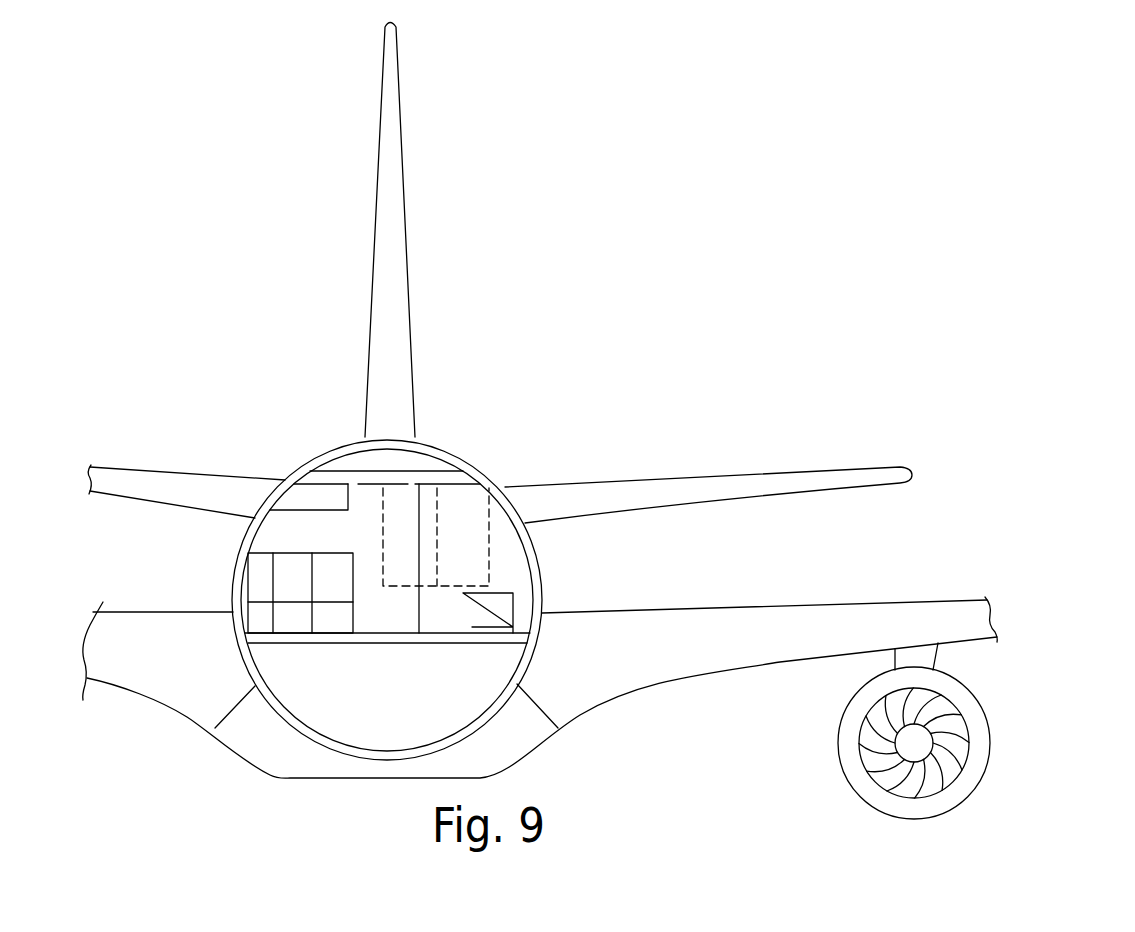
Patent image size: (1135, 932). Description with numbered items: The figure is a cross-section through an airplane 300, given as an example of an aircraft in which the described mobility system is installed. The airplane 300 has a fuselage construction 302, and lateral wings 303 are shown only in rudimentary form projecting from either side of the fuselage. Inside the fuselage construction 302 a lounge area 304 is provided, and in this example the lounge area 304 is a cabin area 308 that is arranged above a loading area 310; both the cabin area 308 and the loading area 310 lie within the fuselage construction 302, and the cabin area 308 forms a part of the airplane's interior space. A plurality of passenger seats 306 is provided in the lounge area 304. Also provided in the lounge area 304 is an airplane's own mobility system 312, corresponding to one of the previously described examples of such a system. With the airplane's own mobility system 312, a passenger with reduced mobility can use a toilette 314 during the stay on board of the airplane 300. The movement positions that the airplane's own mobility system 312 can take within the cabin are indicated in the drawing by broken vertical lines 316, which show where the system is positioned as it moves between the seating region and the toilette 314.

The airplane 300 is at (540, 421).
The fuselage construction 302 is at (505, 487).
The lateral wings 303 is at (728, 610).
The lounge area 304 is at (402, 536).
The passenger seats 306 is at (262, 584).
The cabin area 308 is at (363, 503).
The loading area 310 is at (415, 695).
The airplane's own mobility system 312 is at (486, 469).
The toilette 314 is at (503, 590).
The broken vertical lines 316 is at (383, 520).